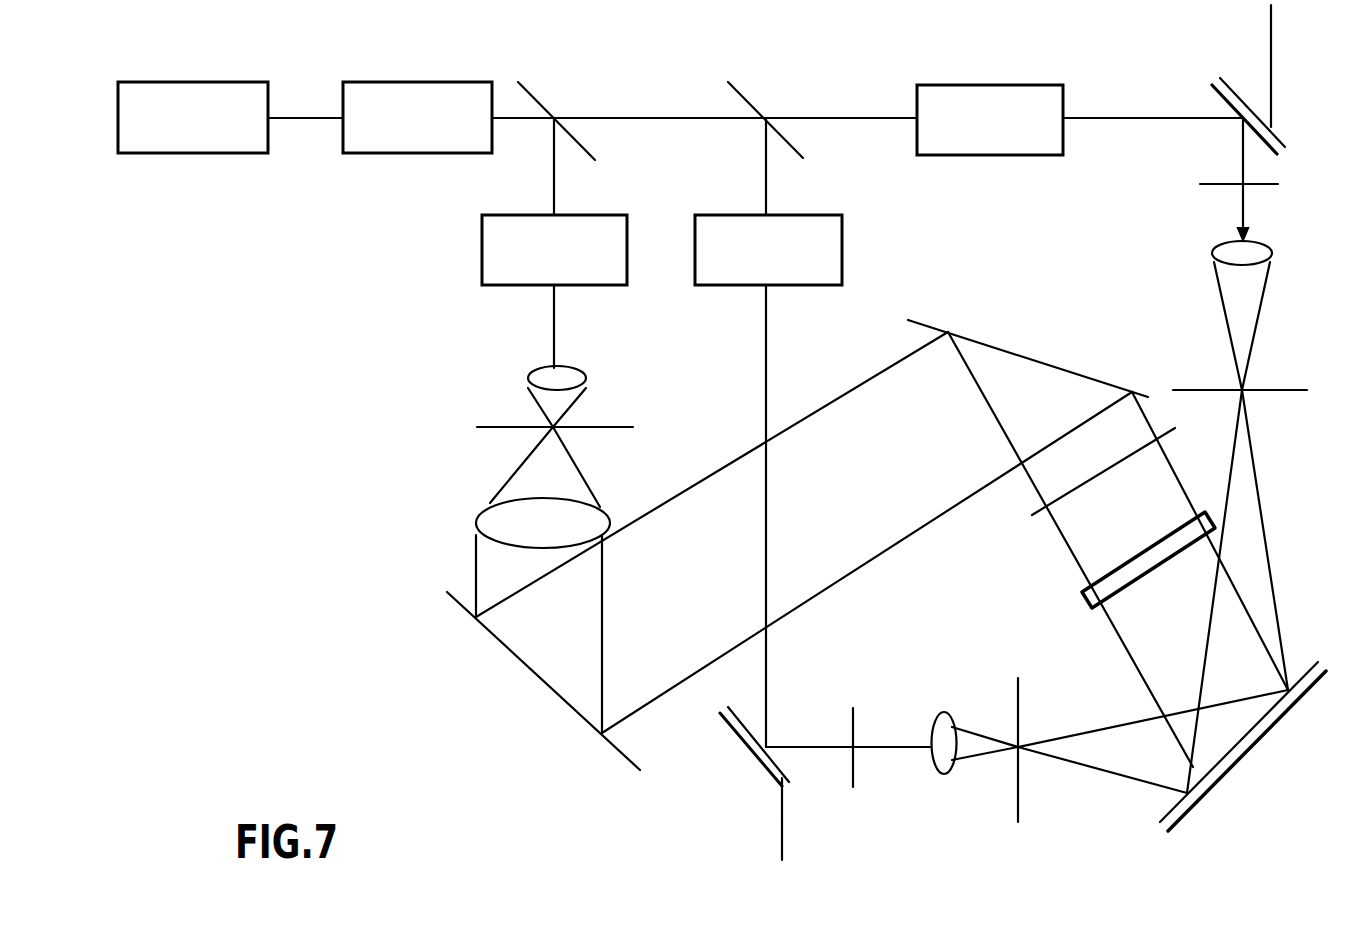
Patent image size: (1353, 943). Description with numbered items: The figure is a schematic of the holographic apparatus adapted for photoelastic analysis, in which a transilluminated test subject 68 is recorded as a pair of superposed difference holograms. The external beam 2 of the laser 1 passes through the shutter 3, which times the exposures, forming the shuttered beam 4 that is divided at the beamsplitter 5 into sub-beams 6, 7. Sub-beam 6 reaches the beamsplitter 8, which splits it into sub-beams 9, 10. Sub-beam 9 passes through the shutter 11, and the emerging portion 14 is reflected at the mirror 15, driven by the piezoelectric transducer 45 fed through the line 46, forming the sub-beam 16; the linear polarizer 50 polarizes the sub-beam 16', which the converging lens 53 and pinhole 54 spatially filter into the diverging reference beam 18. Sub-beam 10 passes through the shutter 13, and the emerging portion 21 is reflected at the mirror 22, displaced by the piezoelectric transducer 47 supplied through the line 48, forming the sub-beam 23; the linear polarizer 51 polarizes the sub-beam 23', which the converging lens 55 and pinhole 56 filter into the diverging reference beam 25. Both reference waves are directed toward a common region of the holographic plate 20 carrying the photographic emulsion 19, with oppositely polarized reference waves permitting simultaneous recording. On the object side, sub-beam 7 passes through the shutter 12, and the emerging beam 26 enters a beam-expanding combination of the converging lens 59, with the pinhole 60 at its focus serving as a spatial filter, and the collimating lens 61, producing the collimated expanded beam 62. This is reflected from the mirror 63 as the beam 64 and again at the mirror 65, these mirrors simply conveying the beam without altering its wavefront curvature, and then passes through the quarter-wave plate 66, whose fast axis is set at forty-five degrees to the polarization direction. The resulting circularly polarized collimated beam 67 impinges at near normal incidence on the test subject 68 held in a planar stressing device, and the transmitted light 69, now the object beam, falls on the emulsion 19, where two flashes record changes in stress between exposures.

The laser 1 is at (212, 92).
The external beam 2 is at (316, 118).
The shutter 3 is at (446, 88).
The shuttered beam 4 is at (536, 118).
The beamsplitter 5 is at (540, 96).
The sub-beam 6 is at (638, 118).
The sub-beam 7 is at (554, 146).
The beamsplitter 8 is at (748, 94).
The sub-beam 9 is at (852, 118).
The sub-beam 10 is at (766, 174).
The shutter 11 is at (1004, 88).
The shutter 12 is at (482, 266).
The shutter 13 is at (694, 280).
The emerging portion 14 is at (1130, 118).
The mirror 15 is at (1222, 100).
The sub-beam 16 is at (1224, 151).
The sub-beam 16' is at (1263, 212).
The diverging beam 18 is at (1258, 562).
The photographic emulsion 19 is at (1172, 782).
The holographic plate 20 is at (1196, 804).
The emerging portion 21 is at (766, 342).
The mirror 22 is at (806, 778).
The sub-beam 23 is at (809, 727).
The sub-beam 23' is at (891, 766).
The diverging beam 25 is at (1090, 762).
The beam 26 is at (555, 340).
The piezoelectric transducer 45 is at (1244, 100).
The line 46 is at (1271, 62).
The piezoelectric transducer 47 is at (732, 732).
The line 48 is at (782, 824).
The linear polarizer 50 is at (1222, 184).
The linear polarizer 51 is at (856, 722).
The converging lens 53 is at (1262, 248).
The pinhole 54 is at (1290, 394).
The converging lens 55 is at (952, 762).
The pinhole 56 is at (1017, 765).
The converging lens 59 is at (543, 378).
The pinhole 60 is at (500, 428).
The collimating lens 61 is at (488, 524).
The expanded beam 62 is at (485, 590).
The mirror 63 is at (458, 602).
The beam 64 is at (812, 422).
The mirror 65 is at (910, 328).
The quarter-wave plate 66 is at (1025, 522).
The circularly polarized collimated beam 67 is at (1086, 554).
The test subject 68 is at (1084, 602).
The transmitted light 69 is at (1142, 672).